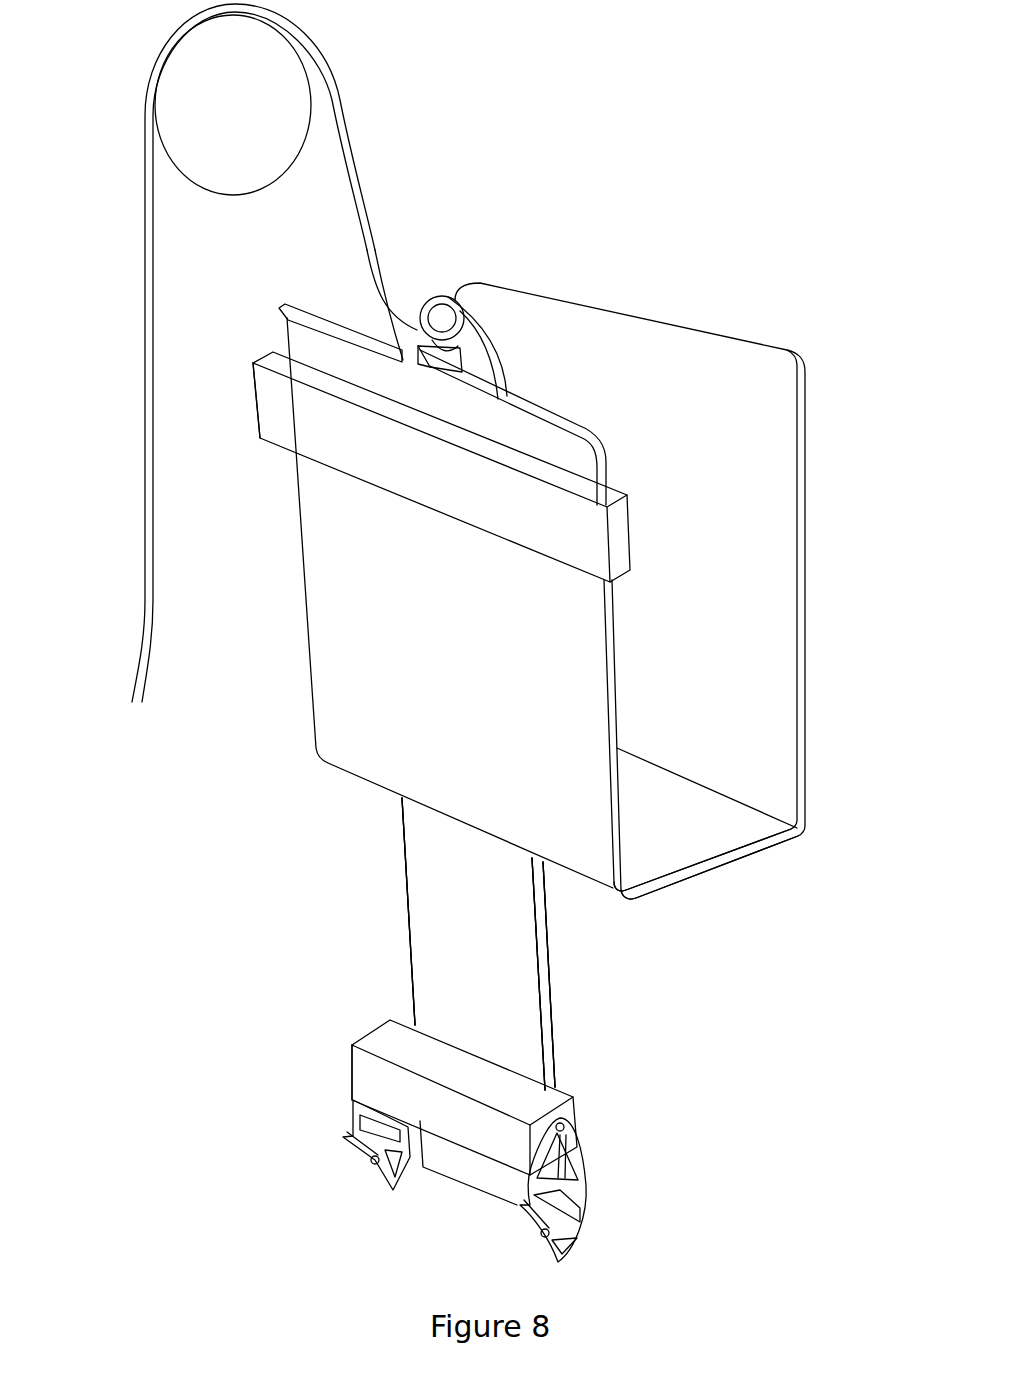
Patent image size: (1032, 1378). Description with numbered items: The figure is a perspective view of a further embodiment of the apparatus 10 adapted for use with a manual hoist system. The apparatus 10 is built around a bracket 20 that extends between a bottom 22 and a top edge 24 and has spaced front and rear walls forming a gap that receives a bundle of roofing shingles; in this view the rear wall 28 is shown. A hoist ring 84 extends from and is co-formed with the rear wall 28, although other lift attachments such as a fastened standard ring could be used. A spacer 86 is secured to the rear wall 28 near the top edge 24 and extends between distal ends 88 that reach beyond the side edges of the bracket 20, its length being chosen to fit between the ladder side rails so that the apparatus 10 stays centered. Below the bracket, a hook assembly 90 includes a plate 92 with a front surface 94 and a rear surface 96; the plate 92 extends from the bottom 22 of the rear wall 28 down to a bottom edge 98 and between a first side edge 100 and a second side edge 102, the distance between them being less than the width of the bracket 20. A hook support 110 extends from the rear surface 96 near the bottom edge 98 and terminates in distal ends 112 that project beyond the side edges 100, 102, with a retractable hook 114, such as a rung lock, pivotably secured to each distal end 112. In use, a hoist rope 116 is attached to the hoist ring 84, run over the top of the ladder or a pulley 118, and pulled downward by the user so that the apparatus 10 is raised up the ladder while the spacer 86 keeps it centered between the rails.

The apparatus 10 is at (771, 238).
The bracket 20 is at (806, 655).
The bottom 22 is at (722, 870).
The top edge 24 is at (313, 305).
The rear wall 28 is at (361, 330).
The hoist ring 84 is at (433, 292).
The spacer 86 is at (293, 425).
The distal ends 88 is at (258, 402).
The hook assembly 90 is at (402, 866).
The plate 92 is at (548, 960).
The front surface 94 is at (558, 1022).
The rear surface 96 is at (452, 902).
The bottom edge 98 is at (470, 1190).
The first side edge 100 is at (402, 832).
The second side edge 102 is at (540, 895).
The hook support 110 is at (560, 1098).
The distal ends 112 is at (352, 1075).
The retractable hook 114 is at (384, 1177).
The hoist rope 116 is at (360, 110).
The pulley 118 is at (195, 97).